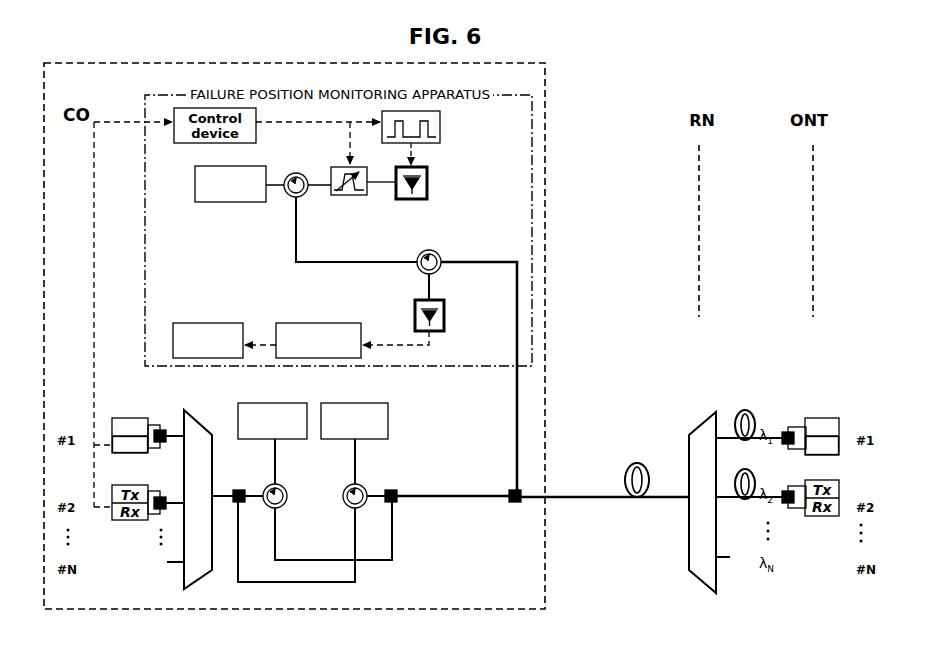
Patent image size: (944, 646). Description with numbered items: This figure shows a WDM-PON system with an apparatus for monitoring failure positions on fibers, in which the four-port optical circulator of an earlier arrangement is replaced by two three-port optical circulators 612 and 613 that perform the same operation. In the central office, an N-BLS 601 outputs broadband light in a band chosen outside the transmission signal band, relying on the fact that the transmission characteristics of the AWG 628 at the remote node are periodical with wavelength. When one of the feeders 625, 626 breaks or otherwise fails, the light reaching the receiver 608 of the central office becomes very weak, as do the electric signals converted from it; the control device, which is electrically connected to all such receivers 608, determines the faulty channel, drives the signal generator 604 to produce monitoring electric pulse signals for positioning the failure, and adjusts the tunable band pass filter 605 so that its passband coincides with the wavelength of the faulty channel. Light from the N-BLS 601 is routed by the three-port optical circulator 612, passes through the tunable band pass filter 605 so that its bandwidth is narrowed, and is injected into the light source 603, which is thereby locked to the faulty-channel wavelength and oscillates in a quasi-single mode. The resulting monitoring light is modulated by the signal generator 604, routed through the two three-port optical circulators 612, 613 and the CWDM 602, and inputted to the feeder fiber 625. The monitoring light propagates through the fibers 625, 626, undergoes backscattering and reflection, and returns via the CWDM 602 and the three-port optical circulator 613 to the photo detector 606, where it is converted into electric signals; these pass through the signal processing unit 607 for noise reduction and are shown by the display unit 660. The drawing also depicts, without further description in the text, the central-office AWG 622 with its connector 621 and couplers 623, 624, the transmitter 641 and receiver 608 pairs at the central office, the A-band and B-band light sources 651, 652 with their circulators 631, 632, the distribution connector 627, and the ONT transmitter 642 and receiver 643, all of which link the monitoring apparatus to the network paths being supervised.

The N-BLS 601 is at (195, 181).
The CWDM 602 is at (511, 505).
The light source 603 is at (408, 199).
The signal generator 604 is at (432, 131).
The tunable band pass filter 605 is at (338, 173).
The photo detector 606 is at (443, 311).
The signal processing unit 607 is at (322, 323).
The receiver 608 is at (134, 454).
The three-port optical circulator 612 is at (303, 197).
The three-port optical circulator 613 is at (440, 254).
The optical connector / coupler 621 is at (160, 427).
The arrayed waveguide grating (AWG) of CO 622 is at (204, 426).
The optical coupler (junction) 623 is at (236, 503).
The optical coupler (junction) 624 is at (394, 488).
The feeder fiber 625 is at (638, 498).
The feeder 626 is at (733, 421).
The optical connector 627 is at (782, 431).
The AWG 628 is at (690, 430).
The optical circulator 631 is at (288, 494).
The optical circulator 632 is at (343, 494).
The CO optical transceiver (Tx/Rx) 641 is at (128, 418).
The ONT optical transceiver (Tx/Rx) 642 is at (822, 418).
The optical receiver (Rx) of ONT 643 is at (839, 446).
The A-band broadband light source (BLS) 651 is at (264, 403).
The B-band broadband light source (BLS) 652 is at (344, 403).
The display unit 660 is at (217, 323).